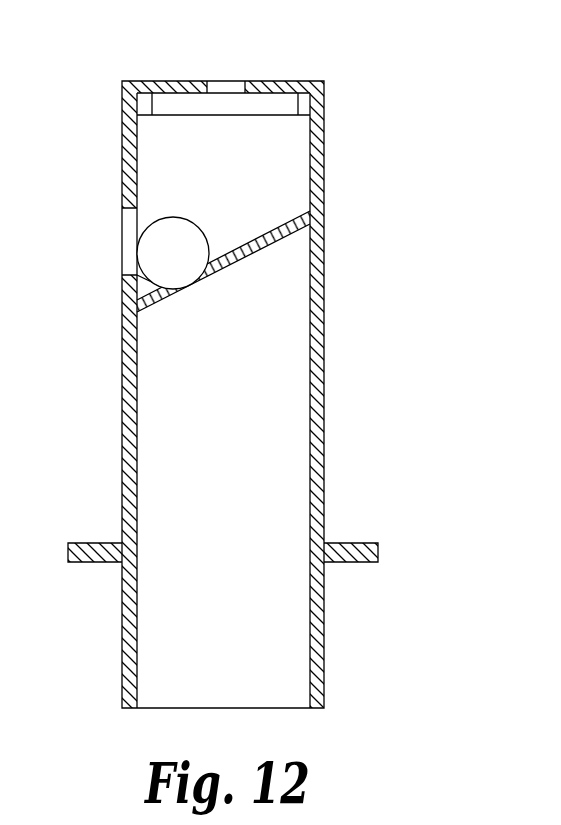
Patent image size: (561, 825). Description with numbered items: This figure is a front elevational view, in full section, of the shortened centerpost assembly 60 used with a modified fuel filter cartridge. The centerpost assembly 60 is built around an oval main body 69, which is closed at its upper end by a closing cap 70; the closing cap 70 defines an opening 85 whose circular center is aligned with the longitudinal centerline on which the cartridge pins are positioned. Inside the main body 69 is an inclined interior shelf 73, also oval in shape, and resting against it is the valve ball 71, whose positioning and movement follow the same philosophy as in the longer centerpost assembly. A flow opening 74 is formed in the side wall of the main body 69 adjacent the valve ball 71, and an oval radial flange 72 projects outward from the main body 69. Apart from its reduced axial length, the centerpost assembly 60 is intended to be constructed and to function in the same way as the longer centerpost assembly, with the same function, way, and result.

The centerpost assembly 60 is at (235, 355).
The main body 69 is at (325, 412).
The closing cap 70 is at (302, 82).
The opening 85 is at (220, 82).
The flow opening 74 is at (130, 228).
The radial flange 72 is at (358, 543).
The interior shelf 73 is at (285, 235).
The valve ball 71 is at (175, 232).